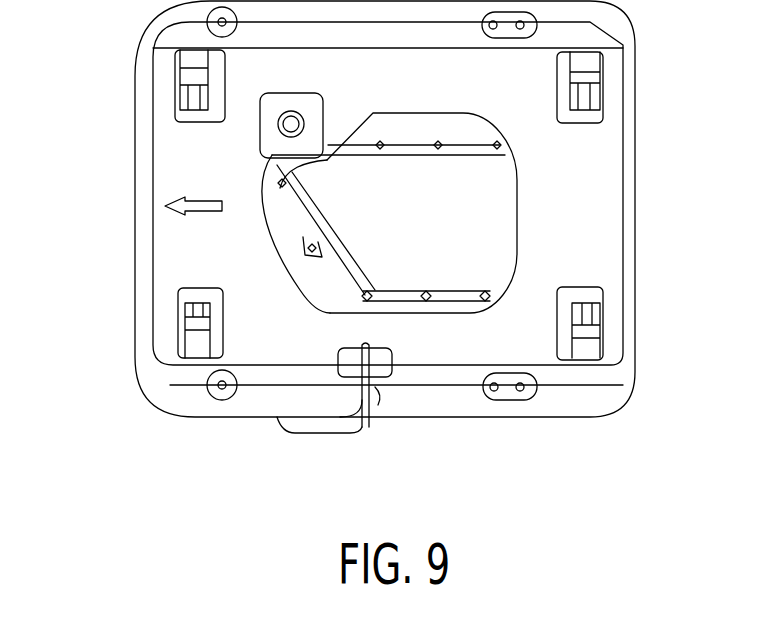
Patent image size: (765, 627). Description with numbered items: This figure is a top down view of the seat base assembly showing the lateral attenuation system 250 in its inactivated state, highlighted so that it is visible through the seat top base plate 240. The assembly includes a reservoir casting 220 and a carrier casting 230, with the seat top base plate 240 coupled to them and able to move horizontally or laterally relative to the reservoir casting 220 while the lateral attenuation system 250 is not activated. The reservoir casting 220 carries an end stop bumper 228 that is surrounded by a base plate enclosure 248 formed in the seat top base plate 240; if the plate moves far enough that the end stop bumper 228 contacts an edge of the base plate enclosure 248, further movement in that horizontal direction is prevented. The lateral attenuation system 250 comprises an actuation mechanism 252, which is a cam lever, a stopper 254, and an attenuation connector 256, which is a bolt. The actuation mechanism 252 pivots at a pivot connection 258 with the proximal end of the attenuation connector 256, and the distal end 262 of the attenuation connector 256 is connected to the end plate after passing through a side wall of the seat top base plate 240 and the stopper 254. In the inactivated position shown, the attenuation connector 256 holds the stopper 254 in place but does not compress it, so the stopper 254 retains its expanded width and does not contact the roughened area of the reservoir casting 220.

The reservoir casting 220 is at (467, 135).
The end stop bumper 228 is at (288, 127).
The carrier casting 230 is at (188, 88).
The seat top base plate 240 is at (152, 173).
The base plate enclosure 248 is at (273, 153).
The lateral attenuation system 250 is at (240, 431).
The actuation mechanism 252 is at (308, 425).
The stopper 254 is at (388, 361).
The attenuation connector 256 is at (370, 392).
The pivot connection 258 is at (362, 400).
The distal end 262 is at (358, 343).